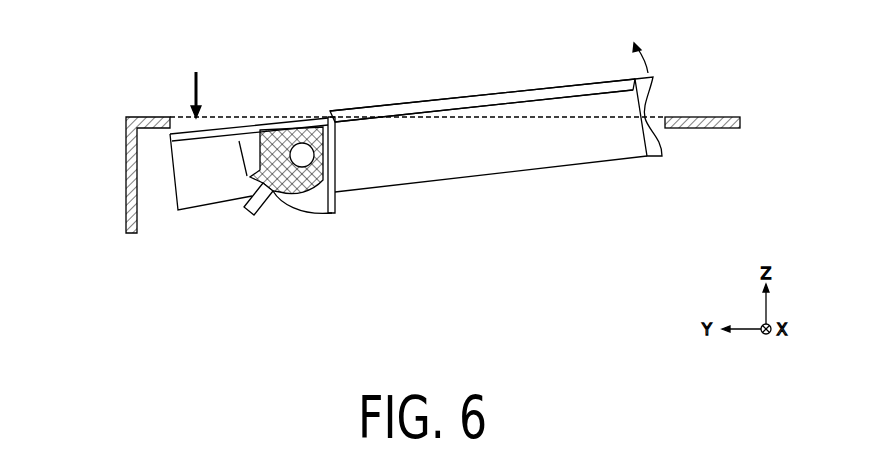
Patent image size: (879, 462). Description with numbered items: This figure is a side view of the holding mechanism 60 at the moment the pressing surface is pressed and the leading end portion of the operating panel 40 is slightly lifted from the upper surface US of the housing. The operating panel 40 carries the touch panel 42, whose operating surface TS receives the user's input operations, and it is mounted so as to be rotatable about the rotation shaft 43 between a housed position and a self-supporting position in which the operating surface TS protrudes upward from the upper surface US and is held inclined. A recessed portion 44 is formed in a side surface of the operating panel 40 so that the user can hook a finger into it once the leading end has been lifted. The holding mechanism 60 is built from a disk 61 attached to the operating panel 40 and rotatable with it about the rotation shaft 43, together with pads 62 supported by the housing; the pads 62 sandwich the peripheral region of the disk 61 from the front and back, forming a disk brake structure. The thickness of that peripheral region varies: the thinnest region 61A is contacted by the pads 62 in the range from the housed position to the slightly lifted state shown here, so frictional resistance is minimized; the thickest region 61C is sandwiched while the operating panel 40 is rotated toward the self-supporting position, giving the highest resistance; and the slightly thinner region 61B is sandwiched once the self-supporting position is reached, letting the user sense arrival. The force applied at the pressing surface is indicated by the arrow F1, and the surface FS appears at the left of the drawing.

The operating panel 40 is at (482, 150).
The touch panel 42 is at (458, 100).
The rotation shaft 43 is at (302, 152).
The recessed portion 44 is at (650, 102).
The holding mechanism 60 is at (287, 189).
The disk 61 is at (287, 176).
The region 61A is at (288, 207).
The region 61B is at (248, 152).
The region 61C is at (252, 182).
The pads 62 is at (249, 213).
The front surface FS is at (123, 186).
The operating surface TS is at (498, 91).
The upper surface US is at (702, 117).
The force F1 is at (195, 83).